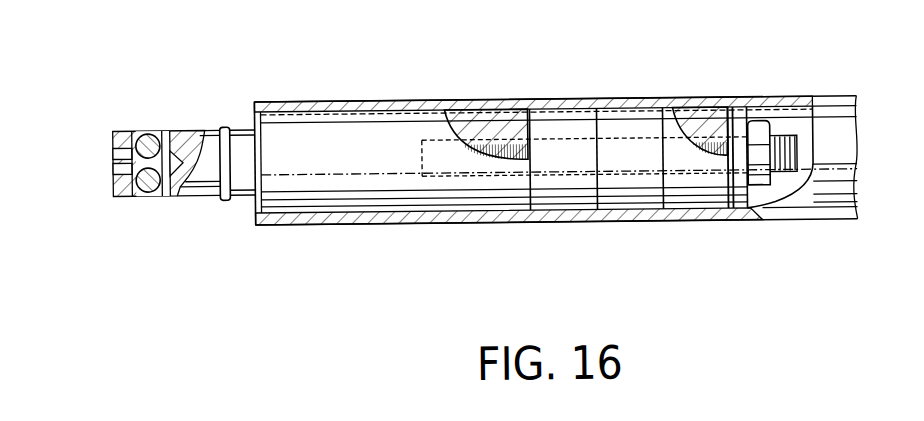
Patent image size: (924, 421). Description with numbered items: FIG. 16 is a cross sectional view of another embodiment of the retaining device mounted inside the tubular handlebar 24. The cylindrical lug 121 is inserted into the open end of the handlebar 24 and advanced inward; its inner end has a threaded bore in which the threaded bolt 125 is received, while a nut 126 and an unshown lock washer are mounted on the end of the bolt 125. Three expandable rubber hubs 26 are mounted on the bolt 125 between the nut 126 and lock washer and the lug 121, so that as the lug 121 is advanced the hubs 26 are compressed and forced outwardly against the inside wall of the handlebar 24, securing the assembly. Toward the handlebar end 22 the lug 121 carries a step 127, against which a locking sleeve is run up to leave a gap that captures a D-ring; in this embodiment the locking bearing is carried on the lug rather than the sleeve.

The handlebar end 22 is at (254, 110).
The handlebar 24 is at (403, 102).
The expandable rubber hubs 26 is at (562, 198).
The cylindrical lug 121 is at (468, 125).
The threaded bolt 125 is at (786, 198).
The nut 126 is at (758, 135).
The step 127 is at (223, 198).